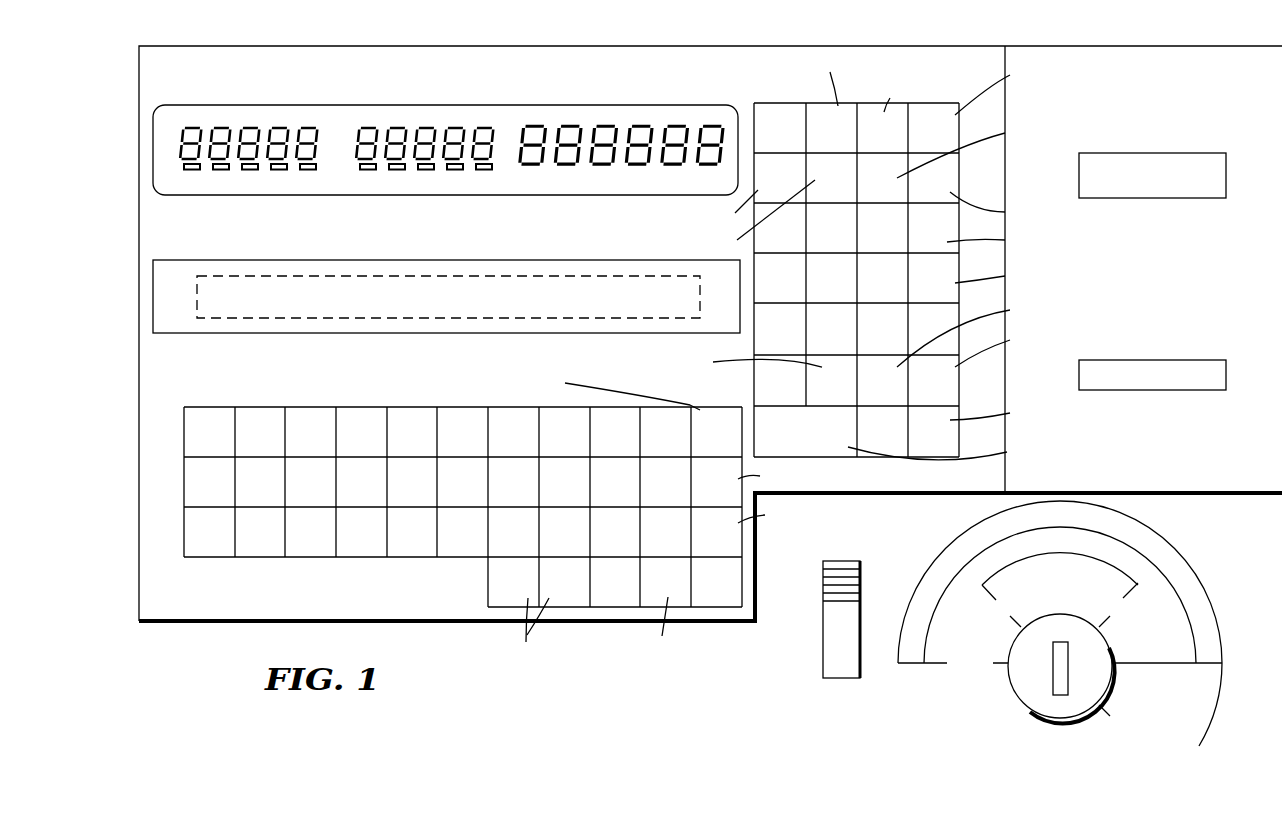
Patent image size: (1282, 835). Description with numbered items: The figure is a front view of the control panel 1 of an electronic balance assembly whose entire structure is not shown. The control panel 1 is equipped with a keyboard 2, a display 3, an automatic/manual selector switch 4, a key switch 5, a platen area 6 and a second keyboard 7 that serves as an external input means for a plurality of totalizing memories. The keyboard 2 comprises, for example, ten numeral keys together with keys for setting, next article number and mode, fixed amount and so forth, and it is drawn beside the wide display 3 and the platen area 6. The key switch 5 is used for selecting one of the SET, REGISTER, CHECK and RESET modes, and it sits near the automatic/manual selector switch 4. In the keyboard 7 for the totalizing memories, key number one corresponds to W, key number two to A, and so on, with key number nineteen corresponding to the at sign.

The control panel 1 is at (909, 46).
The keyboard 2 is at (753, 282).
The display 3 is at (451, 104).
The automatic/manual selector switch 4 is at (823, 595).
The key switch 5 is at (1053, 670).
The platen area 6 is at (314, 278).
The keyboard 7 is at (375, 552).